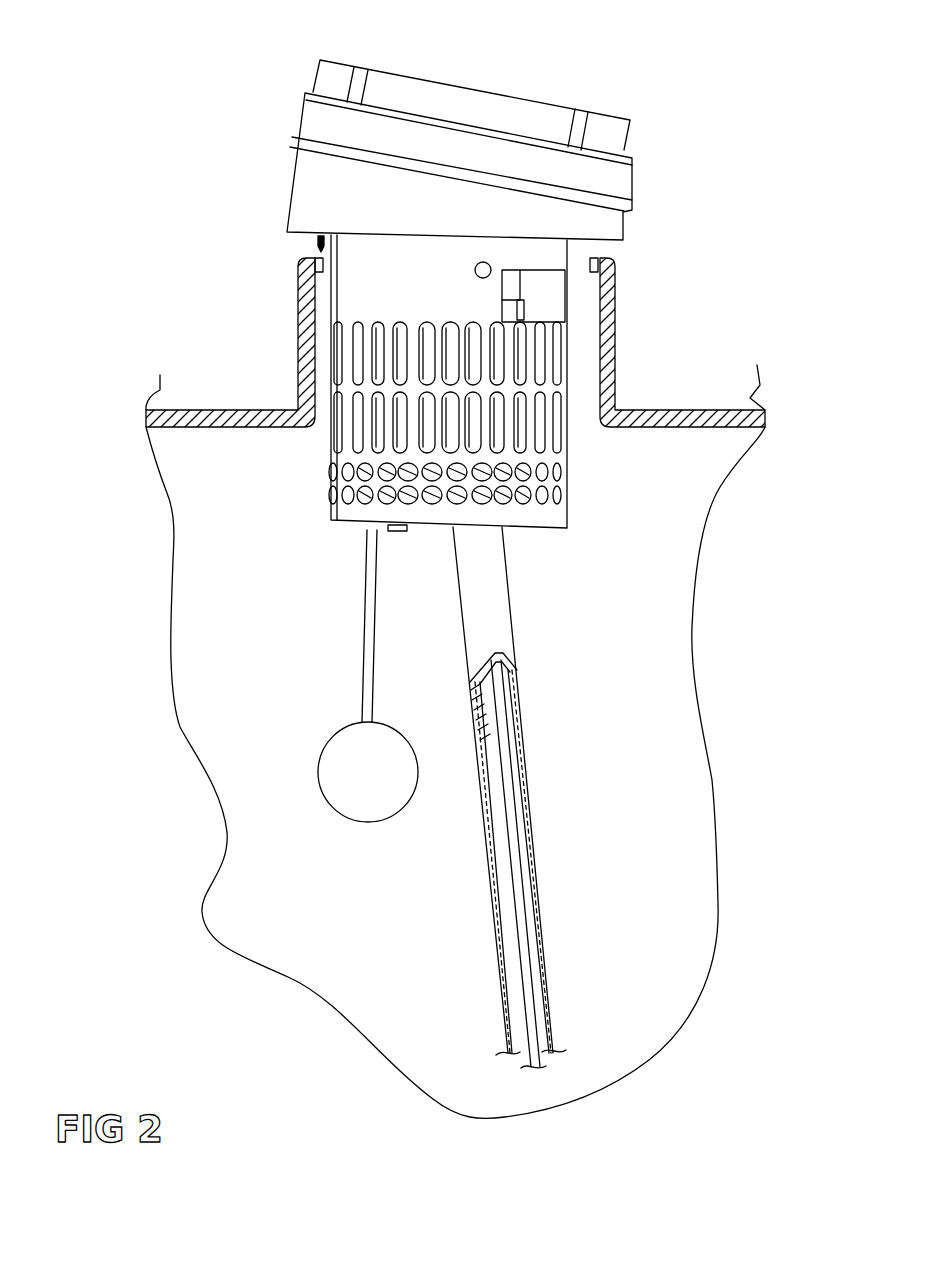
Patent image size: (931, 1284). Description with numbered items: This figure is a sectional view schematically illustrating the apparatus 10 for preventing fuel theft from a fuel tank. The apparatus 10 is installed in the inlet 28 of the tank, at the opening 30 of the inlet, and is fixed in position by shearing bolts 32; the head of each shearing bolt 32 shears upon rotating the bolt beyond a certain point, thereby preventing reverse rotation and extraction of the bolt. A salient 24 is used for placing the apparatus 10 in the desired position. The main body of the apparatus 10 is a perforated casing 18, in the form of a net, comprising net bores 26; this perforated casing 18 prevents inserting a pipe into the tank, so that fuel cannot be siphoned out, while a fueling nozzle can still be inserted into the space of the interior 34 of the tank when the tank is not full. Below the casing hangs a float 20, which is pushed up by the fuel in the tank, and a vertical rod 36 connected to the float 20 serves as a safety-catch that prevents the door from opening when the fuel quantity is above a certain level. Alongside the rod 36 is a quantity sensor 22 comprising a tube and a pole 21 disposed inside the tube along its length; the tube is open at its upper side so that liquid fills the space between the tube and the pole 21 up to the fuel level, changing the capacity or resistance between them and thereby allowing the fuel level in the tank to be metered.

The apparatus for preventing fuel theft 10 is at (737, 100).
The perforated casing 18 is at (337, 507).
The float 20 is at (367, 783).
The pole 21 is at (517, 902).
The quantity sensor 22 is at (503, 637).
The salient 24 is at (502, 300).
The net bores 26 is at (427, 357).
The inlet 28 is at (607, 318).
The opening of the inlet 30 is at (313, 251).
The shearing bolt 32 is at (318, 242).
The interior of the tank 34 is at (652, 537).
The rod 36 is at (368, 657).